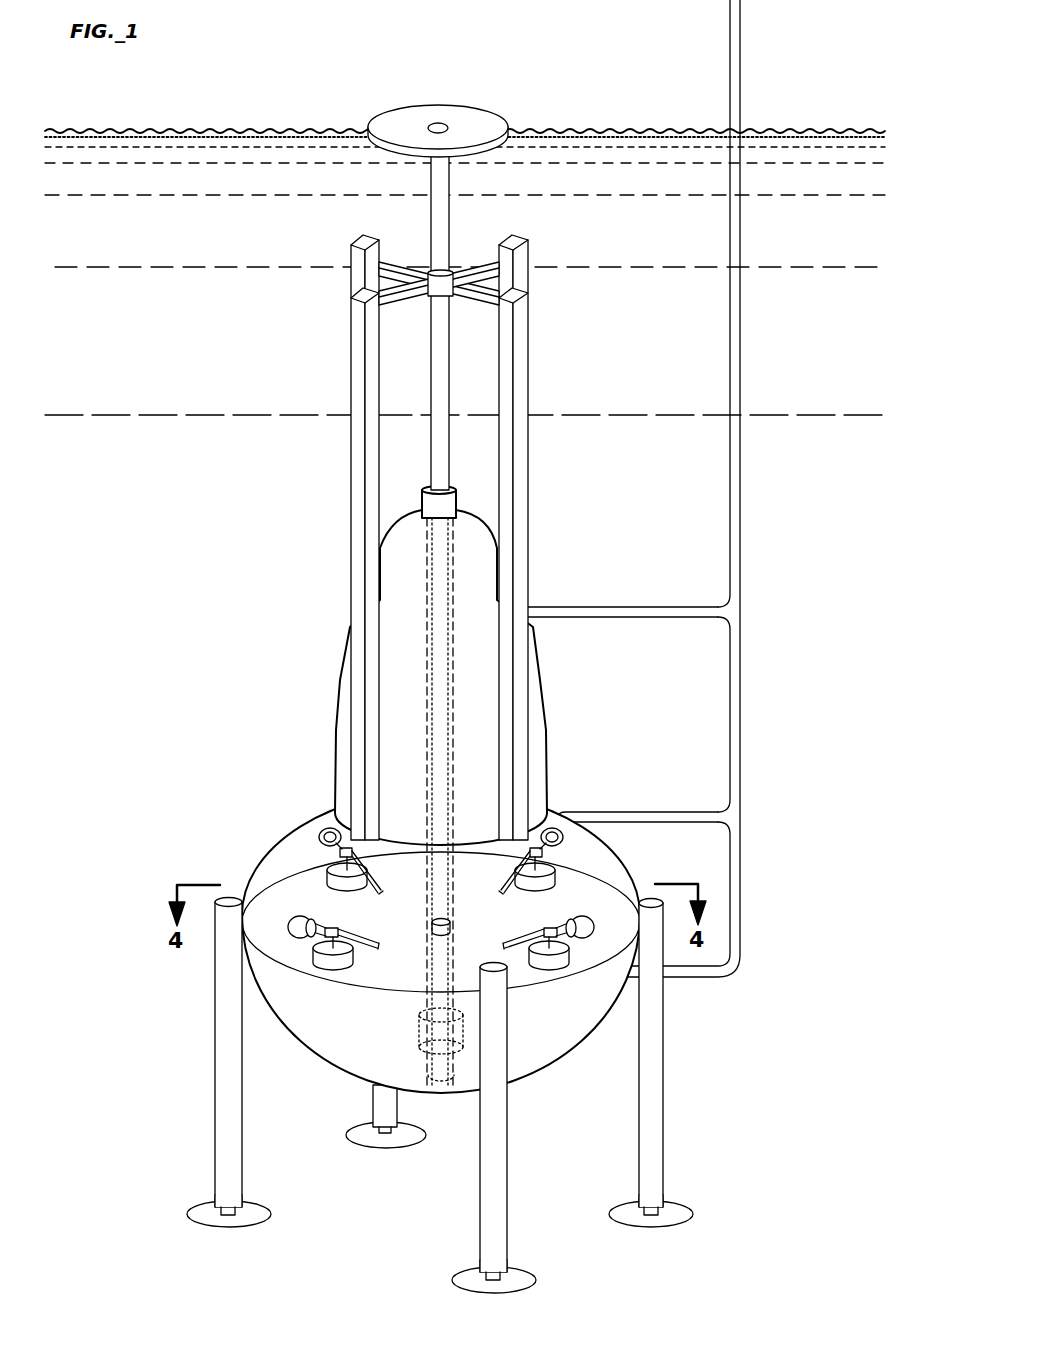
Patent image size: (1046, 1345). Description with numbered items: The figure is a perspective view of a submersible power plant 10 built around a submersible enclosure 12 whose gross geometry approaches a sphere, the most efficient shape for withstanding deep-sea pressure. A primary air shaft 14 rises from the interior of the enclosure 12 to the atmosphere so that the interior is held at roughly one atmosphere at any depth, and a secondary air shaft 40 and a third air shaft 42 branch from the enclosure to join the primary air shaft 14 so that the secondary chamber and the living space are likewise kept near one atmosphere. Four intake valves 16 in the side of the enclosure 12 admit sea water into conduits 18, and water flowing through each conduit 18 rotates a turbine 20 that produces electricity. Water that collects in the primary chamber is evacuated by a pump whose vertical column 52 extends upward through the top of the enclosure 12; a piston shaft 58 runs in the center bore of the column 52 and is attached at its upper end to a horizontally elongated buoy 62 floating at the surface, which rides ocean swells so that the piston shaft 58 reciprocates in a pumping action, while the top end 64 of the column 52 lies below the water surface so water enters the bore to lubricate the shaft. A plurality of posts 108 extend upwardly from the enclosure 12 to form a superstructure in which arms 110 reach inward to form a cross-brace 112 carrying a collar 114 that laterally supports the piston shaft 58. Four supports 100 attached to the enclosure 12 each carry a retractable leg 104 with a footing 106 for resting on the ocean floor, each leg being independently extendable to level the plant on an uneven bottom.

The submersible power plant 10 is at (233, 768).
The submersible enclosure 12 is at (272, 850).
The primary air shaft 14 is at (740, 357).
The intake valve 16 is at (297, 918).
The conduit 18 is at (386, 885).
The turbine 20 is at (342, 852).
The secondary air shaft 40 is at (628, 818).
The third air shaft 42 is at (584, 606).
The vertical column 52 is at (455, 690).
The piston shaft 58 is at (450, 245).
The buoy 62 is at (402, 108).
The top end of the column 64 is at (462, 500).
The support 100 is at (215, 1148).
The leg 104 is at (372, 1138).
The footing 106 is at (670, 1210).
The post 108 is at (350, 486).
The arm 110 is at (405, 310).
The cross-brace 112 is at (520, 275).
The collar 114 is at (438, 287).